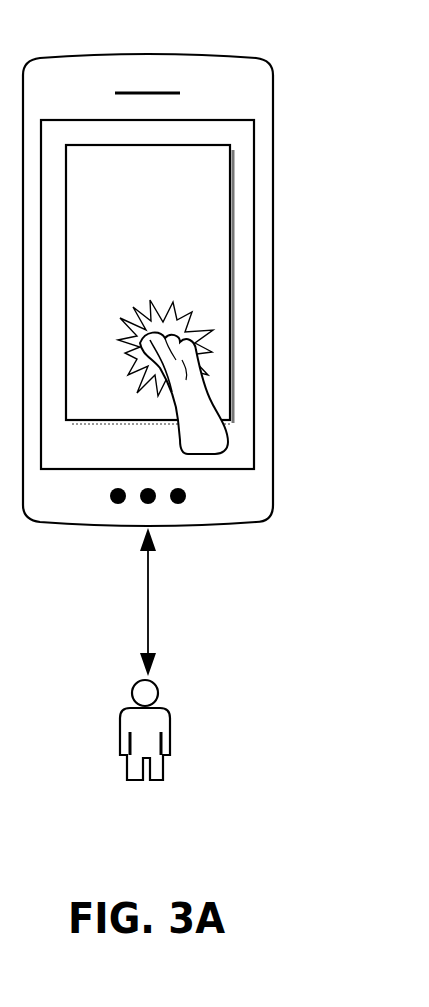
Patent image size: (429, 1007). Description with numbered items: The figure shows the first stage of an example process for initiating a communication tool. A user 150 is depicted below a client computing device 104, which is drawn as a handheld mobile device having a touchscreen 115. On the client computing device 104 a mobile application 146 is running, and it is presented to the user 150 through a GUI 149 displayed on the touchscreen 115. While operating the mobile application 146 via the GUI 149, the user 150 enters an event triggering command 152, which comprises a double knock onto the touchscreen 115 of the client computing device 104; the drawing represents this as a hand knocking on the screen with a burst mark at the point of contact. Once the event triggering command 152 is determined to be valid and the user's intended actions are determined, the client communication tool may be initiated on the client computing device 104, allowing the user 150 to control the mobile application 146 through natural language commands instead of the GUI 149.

The client computing device 104 is at (145, 269).
The touchscreen 115 is at (103, 457).
The mobile application 146 is at (230, 282).
The GUI 149 is at (163, 291).
The event triggering command 152 is at (203, 413).
The user 150 is at (165, 842).